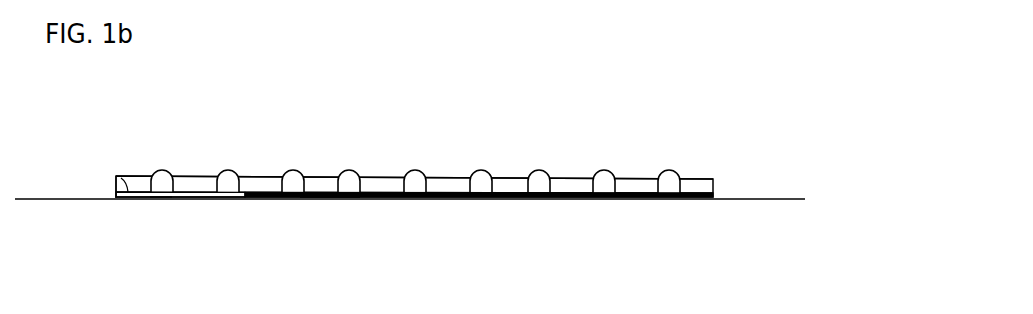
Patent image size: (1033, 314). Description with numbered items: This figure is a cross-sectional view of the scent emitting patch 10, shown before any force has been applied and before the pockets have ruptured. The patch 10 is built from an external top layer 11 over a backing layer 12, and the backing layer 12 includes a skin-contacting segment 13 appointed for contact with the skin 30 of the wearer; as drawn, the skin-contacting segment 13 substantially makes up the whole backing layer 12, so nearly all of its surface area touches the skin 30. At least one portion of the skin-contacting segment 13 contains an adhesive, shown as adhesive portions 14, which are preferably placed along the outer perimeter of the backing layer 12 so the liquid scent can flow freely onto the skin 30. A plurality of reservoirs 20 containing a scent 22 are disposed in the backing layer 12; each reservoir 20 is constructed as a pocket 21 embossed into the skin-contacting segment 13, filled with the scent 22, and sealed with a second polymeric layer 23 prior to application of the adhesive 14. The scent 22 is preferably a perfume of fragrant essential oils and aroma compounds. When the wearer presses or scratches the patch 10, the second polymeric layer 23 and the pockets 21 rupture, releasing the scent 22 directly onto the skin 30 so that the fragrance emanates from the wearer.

The scent emitting patch 10 is at (697, 191).
The external top layer 11 is at (638, 178).
The backing layer 12 is at (572, 197).
The skin-contacting segment 13 is at (327, 197).
The adhesive portions 14 is at (117, 176).
The reservoir 20 is at (227, 165).
The pocket 21 is at (283, 189).
The scent 22 is at (284, 188).
The second polymeric layer 23 is at (160, 193).
The skin 30 is at (68, 190).